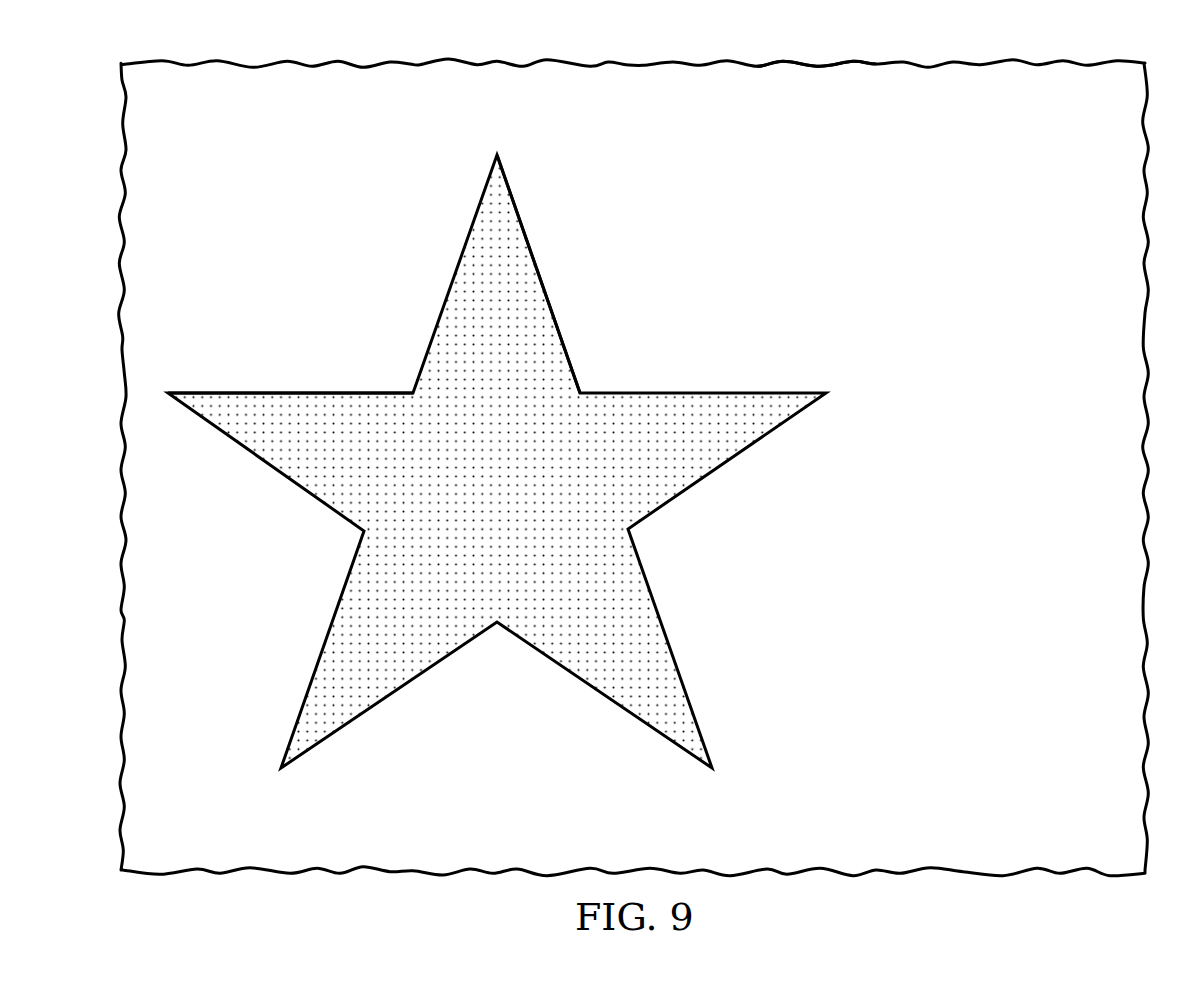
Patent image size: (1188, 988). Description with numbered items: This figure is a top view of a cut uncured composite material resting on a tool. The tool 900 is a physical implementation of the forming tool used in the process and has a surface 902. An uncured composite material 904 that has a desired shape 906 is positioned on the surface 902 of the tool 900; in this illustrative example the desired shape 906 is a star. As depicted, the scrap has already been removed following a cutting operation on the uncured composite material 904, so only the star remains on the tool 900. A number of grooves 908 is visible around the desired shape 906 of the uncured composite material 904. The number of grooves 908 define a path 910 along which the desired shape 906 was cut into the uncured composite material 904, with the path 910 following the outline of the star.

The tool 900 is at (118, 383).
The surface 902 is at (810, 75).
The uncured composite material 904 is at (518, 476).
The desired shape 906 is at (338, 267).
The number of grooves 908 is at (296, 387).
The path 910 is at (550, 281).